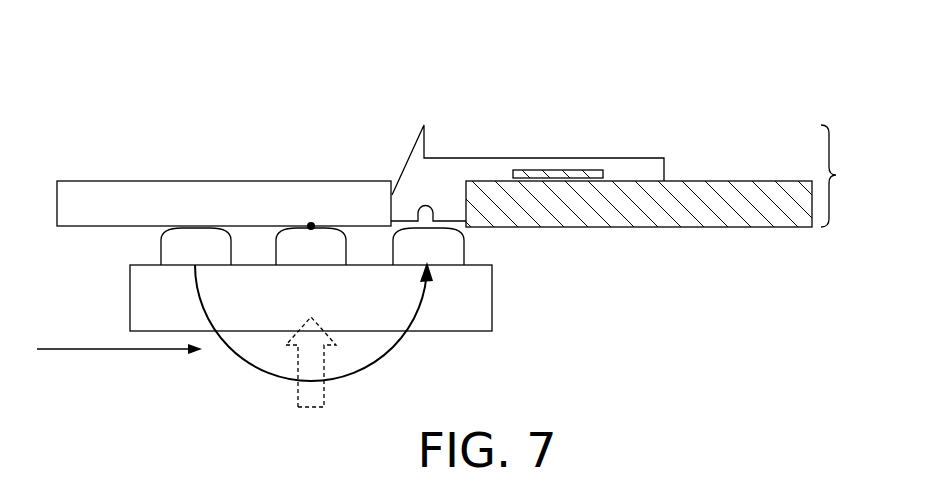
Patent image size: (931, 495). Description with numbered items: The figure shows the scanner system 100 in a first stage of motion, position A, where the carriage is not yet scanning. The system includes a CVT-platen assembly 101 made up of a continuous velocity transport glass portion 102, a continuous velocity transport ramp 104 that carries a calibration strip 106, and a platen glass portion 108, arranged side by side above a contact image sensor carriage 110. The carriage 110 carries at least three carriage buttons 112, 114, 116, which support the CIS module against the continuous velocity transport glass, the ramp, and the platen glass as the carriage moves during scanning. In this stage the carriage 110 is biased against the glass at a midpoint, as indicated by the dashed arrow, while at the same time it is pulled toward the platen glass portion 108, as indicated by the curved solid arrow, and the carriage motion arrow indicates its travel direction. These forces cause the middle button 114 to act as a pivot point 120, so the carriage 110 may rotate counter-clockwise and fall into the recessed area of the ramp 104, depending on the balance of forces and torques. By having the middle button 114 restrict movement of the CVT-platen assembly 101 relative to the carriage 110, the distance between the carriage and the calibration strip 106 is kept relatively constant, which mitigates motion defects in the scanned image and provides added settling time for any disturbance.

The scanner system 100 is at (268, 68).
The CVT-platen assembly 101 is at (848, 176).
The continuous velocity transport glass portion 102 is at (223, 181).
The continuous velocity transport ramp 104 is at (408, 168).
The calibration strip 106 is at (550, 170).
The platen glass portion 108 is at (740, 181).
The contact image sensor carriage 110 is at (493, 297).
The carriage button 112 is at (179, 258).
The middle button 114 is at (294, 258).
The carriage button 116 is at (411, 258).
The pivot point 120 is at (311, 222).